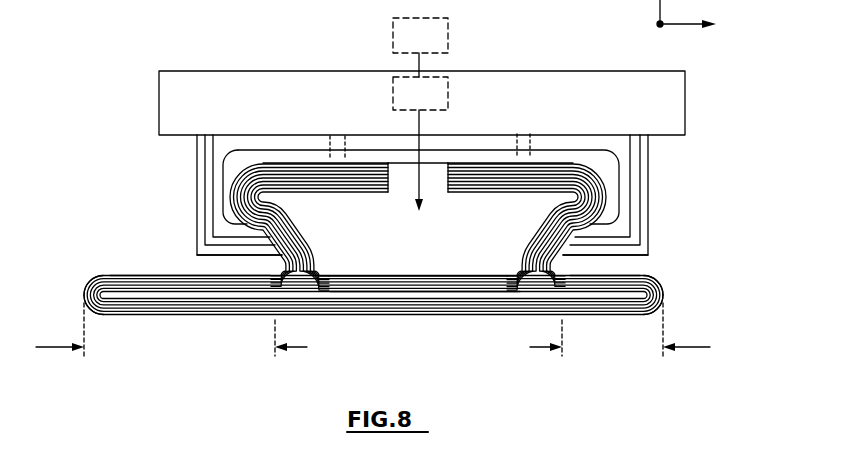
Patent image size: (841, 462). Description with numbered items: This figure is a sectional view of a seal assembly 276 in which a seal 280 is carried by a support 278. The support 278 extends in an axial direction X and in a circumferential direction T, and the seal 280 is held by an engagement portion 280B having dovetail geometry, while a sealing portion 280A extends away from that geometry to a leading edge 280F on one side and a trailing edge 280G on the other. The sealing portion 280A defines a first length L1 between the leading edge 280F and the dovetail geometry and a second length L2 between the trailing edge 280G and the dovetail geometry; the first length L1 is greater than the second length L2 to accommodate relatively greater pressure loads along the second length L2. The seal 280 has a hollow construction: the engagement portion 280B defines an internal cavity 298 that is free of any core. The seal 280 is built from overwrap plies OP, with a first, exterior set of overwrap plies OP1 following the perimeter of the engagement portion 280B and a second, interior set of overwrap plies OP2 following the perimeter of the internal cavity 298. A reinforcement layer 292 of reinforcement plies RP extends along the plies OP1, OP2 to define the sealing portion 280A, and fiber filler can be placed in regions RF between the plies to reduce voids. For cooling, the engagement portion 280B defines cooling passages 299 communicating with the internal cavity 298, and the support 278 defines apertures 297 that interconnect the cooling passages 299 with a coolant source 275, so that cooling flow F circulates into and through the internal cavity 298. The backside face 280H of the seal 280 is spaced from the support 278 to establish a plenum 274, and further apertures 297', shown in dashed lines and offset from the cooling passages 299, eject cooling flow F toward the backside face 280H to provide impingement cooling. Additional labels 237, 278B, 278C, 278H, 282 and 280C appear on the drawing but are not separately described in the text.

The seal assembly 276 is at (190, 50).
The circuit board 237 is at (686, 108).
The support 278 is at (240, 124).
The housing left side wall 278B is at (197, 184).
The housing right side wall 278C is at (648, 161).
The housing flange 278H is at (210, 258).
The inner frame 282 is at (309, 156).
The apertures 297 is at (330, 135).
The apertures 297' is at (428, 99).
The cooling passages 299 is at (444, 193).
The coolant source 275 is at (441, 46).
The plenum 274 is at (441, 106).
The cooling flow F is at (337, 148).
The circumferential direction T is at (660, 26).
The axial direction X is at (697, 27).
The seal 280 is at (107, 262).
The backside face 280H is at (487, 156).
The engagement portion 280B is at (540, 163).
The sealing portion 280A is at (380, 318).
The ribbon right portion 280C is at (524, 318).
The leading edge 280F is at (86, 290).
The trailing edge 280G is at (664, 296).
The reinforcement layer 292 is at (180, 315).
The overwrap plies OP is at (319, 227).
The first set of overwrap plies OP1 is at (287, 231).
The second set of overwrap plies OP2 is at (295, 255).
The regions RF is at (102, 296).
The reinforcement plies RP is at (460, 302).
The internal cavity 298 is at (492, 266).
The first length L1 is at (60, 347).
The second length L2 is at (688, 347).